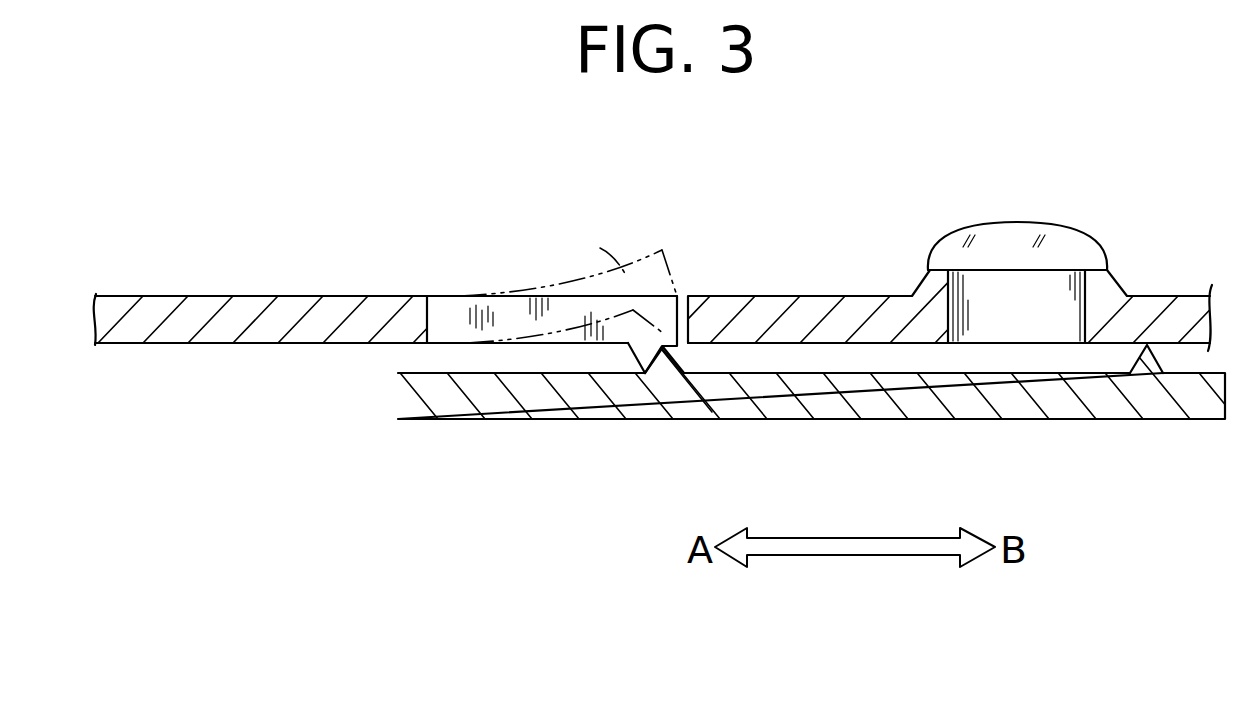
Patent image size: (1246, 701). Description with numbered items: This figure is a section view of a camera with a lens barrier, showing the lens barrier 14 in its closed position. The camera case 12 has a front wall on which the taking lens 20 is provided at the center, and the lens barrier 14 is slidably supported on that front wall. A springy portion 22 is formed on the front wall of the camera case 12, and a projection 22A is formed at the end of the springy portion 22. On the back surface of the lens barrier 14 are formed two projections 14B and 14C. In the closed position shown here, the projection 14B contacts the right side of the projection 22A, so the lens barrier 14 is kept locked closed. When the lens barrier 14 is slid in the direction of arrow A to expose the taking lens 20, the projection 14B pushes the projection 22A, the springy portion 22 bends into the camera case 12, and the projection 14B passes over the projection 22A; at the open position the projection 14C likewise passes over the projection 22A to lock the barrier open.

The camera case 12 is at (340, 288).
The springy portion 22 is at (585, 310).
The projection 22A is at (643, 350).
The lens barrier 14 is at (838, 401).
The projection 14B is at (681, 361).
The projection 14C is at (1152, 352).
The taking lens 20 is at (1018, 237).